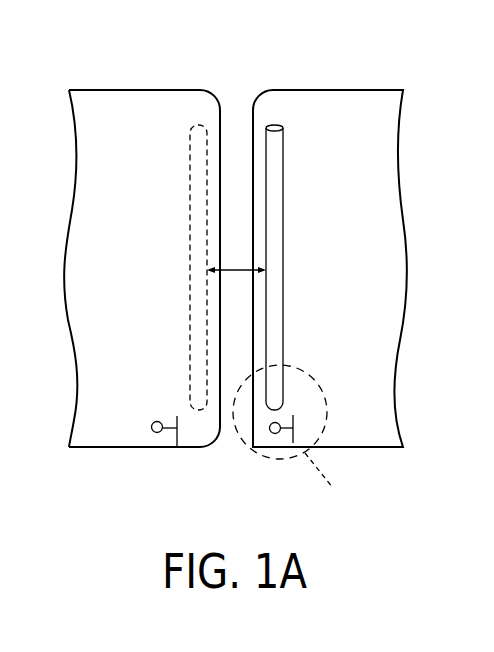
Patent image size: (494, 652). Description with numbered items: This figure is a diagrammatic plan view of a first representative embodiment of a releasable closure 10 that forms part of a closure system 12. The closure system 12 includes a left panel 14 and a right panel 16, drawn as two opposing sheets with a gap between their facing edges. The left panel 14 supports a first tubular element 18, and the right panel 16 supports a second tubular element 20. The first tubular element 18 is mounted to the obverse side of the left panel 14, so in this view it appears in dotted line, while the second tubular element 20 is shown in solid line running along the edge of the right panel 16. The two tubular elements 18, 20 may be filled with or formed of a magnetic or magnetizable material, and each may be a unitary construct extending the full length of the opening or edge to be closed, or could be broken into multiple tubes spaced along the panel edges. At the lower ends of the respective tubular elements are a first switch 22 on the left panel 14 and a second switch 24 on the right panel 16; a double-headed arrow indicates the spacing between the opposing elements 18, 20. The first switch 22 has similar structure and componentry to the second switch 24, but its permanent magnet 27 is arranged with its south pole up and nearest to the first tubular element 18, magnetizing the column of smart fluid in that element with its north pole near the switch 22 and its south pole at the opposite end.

The releasable closure 10 is at (115, 168).
The closure system 12 is at (90, 87).
The left panel 14 is at (77, 400).
The right panel 16 is at (397, 147).
The first tubular element 18 is at (190, 143).
The second tubular element 20 is at (283, 137).
The first switch 22 is at (179, 447).
The second switch 24 is at (273, 441).
The permanent magnet 27 is at (154, 433).